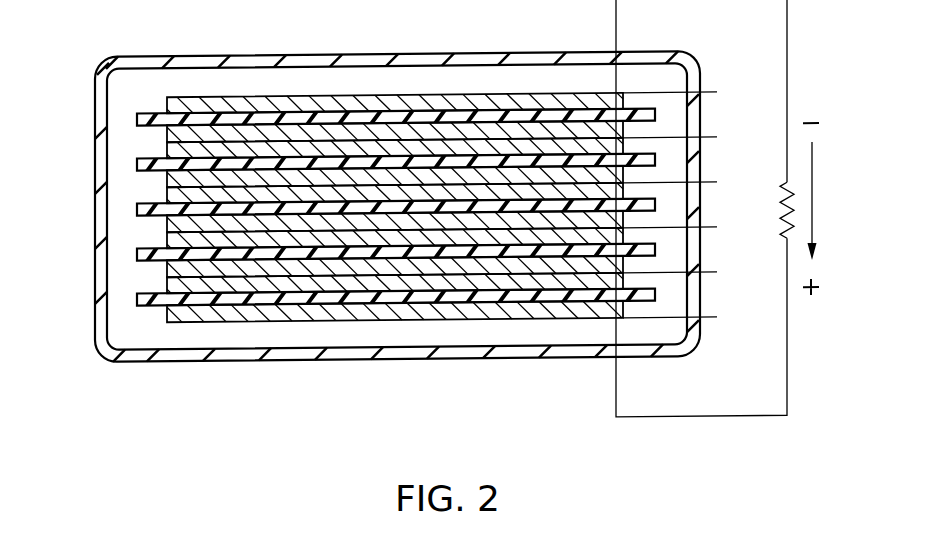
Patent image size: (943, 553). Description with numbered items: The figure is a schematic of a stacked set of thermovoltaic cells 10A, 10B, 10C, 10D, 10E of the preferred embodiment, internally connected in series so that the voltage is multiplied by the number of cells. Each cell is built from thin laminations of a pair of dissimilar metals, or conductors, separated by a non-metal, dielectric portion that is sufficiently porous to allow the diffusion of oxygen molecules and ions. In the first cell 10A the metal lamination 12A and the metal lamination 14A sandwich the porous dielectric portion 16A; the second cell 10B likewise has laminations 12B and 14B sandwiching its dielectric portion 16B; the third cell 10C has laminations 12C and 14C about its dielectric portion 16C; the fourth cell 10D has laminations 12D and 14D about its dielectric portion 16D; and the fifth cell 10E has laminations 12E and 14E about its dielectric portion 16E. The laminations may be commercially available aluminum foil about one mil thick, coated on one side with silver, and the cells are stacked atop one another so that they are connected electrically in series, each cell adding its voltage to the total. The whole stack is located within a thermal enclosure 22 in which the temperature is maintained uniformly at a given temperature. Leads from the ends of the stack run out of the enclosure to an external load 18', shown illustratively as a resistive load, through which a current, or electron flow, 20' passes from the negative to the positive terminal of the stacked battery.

The thermal enclosure 22 is at (360, 53).
The thin lamination of a first dissimilar metal 12A is at (167, 103).
The non-metal porous dielectric portion 16A is at (137, 117).
The thin lamination of a second dissimilar metal 14A is at (167, 131).
The thin lamination of a first dissimilar metal 12B is at (167, 148).
The non-metal porous dielectric portion 16B is at (137, 162).
The thin lamination of a second dissimilar metal 14B is at (167, 176).
The thin lamination of a first dissimilar metal 12C is at (167, 193).
The non-metal porous dielectric portion 16C is at (137, 207).
The thin lamination of a second dissimilar metal 14C is at (167, 221).
The thin lamination of a first dissimilar metal 12D is at (167, 238).
The non-metal porous dielectric portion 16D is at (137, 252).
The thin lamination of a second dissimilar metal 14D is at (167, 266).
The thin lamination of a first dissimilar metal 12E is at (167, 283).
The non-metal porous dielectric portion 16E is at (137, 297).
The thin lamination of a second dissimilar metal 14E is at (167, 311).
The thermovoltaic cell 10A is at (694, 114).
The thermovoltaic cell 10B is at (694, 159).
The thermovoltaic cell 10C is at (694, 204).
The thermovoltaic cell 10D is at (695, 249).
The thermovoltaic cell 10E is at (694, 294).
The external load 18' is at (772, 210).
The current 20' is at (833, 209).